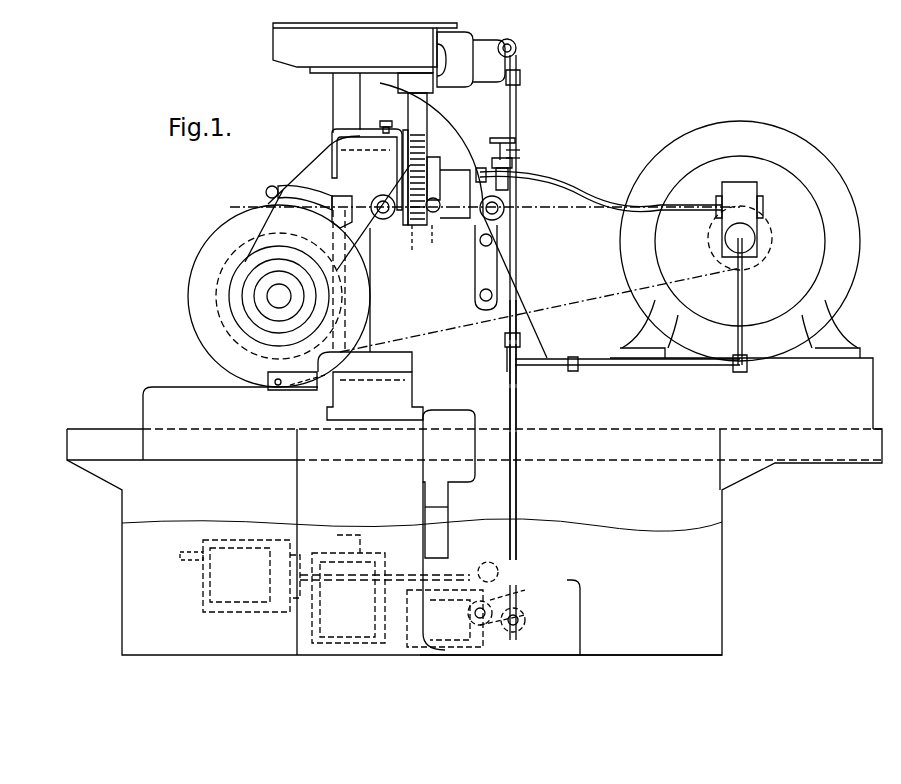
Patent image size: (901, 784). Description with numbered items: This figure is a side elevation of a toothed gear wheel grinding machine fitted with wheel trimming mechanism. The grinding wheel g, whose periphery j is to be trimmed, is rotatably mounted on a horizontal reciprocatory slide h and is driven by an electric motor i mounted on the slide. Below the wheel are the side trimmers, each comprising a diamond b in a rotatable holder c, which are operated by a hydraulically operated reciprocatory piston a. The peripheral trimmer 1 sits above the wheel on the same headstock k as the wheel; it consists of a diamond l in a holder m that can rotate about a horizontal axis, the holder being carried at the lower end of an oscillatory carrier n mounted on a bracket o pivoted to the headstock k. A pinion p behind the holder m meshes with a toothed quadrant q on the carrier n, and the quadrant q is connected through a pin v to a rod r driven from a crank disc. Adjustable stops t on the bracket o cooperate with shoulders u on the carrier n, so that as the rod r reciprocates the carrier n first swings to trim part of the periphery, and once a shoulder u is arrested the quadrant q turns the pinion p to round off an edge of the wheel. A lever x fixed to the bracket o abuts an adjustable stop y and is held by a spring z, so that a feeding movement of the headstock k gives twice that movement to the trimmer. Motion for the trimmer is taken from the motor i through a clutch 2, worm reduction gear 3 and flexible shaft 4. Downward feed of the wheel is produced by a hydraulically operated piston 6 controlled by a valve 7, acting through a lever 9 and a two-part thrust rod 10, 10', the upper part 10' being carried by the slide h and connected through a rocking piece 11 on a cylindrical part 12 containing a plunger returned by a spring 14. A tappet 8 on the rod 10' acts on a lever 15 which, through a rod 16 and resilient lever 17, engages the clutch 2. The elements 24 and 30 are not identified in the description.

The peripheral trimmer 1 is at (340, 194).
The clutch 2 is at (455, 194).
The worm reduction gear 3 is at (330, 150).
The flexible shaft 4 is at (585, 190).
The hydraulically operated piston 6 is at (250, 598).
The valve 7 is at (418, 606).
The tappet 8 is at (504, 340).
The lever 9 is at (516, 598).
The thrust rod 10 is at (528, 515).
The thrust rod part 10' is at (544, 385).
The rocking piece 11 is at (516, 62).
The cylindrical part 12 is at (510, 50).
The spring 14 is at (440, 171).
The lever 15 is at (508, 365).
The rod 16 is at (742, 300).
The resilient lever 17 is at (725, 237).
The shaft 24 is at (325, 626).
The column 30 is at (445, 543).
The reciprocatory piston a is at (336, 594).
The diamond b is at (268, 382).
The rotatable holder c is at (295, 387).
The grinding wheel g is at (200, 322).
The horizontal reciprocatory slide h is at (180, 410).
The electric motor i is at (805, 160).
The periphery j is at (189, 292).
The headstock k is at (285, 187).
The diamond l is at (262, 207).
The holder m is at (293, 190).
The carrier n is at (366, 187).
The bracket o is at (362, 133).
The pinion p is at (409, 246).
The toothed quadrant q is at (373, 221).
The rod r is at (430, 140).
The adjustable stops t is at (386, 113).
The shoulders u is at (405, 125).
The pin v is at (431, 250).
The lever x is at (471, 267).
The adjustable stop y is at (508, 165).
The spring z is at (504, 146).